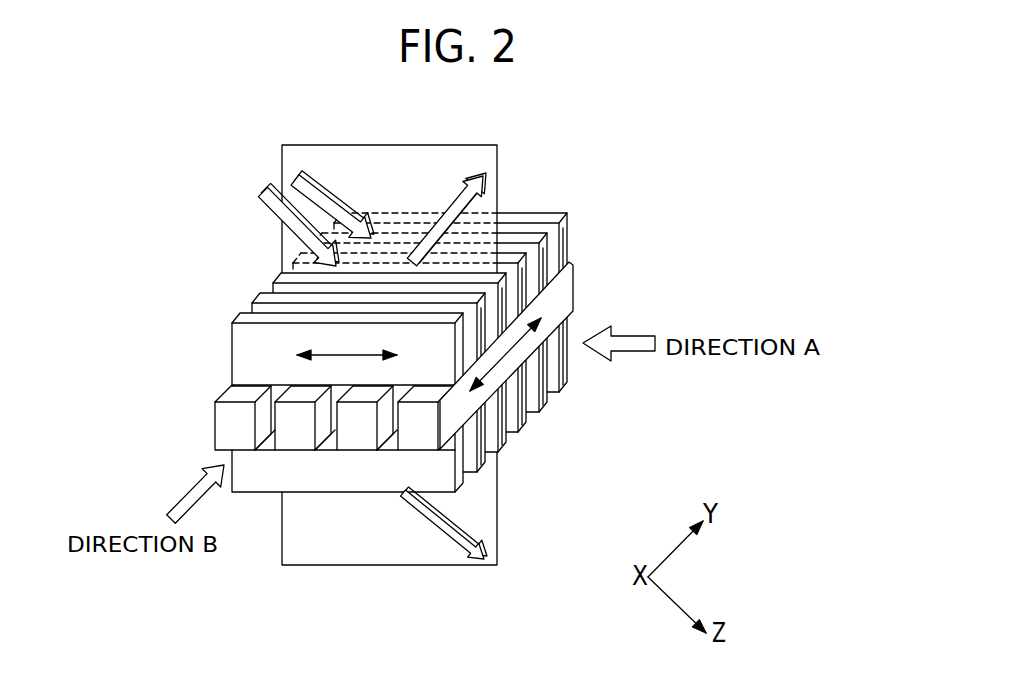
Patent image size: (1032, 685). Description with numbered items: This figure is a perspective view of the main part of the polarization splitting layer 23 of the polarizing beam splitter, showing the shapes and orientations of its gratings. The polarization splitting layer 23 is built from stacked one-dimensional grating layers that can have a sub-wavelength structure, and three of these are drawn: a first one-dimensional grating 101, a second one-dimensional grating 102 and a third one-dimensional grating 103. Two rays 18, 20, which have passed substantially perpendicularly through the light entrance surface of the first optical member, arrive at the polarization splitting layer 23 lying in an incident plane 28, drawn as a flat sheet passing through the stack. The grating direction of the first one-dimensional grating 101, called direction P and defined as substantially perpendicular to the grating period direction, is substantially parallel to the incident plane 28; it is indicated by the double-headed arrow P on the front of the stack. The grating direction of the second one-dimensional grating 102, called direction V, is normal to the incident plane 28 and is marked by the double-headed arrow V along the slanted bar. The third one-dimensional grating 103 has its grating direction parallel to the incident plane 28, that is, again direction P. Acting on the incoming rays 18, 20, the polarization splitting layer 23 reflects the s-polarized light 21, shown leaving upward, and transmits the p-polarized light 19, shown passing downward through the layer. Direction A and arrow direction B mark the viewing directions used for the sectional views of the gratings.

The polarization splitting layer 23 is at (647, 143).
The incident plane 28 is at (446, 146).
The ray 18 is at (284, 192).
The ray 20 is at (298, 224).
The s-polarized light 21 is at (479, 196).
The p-polarized light 19 is at (453, 537).
The first one-dimensional grating 101 is at (566, 232).
The second one-dimensional grating 102 is at (544, 361).
The third one-dimensional grating 103 is at (563, 361).
The direction P is at (330, 353).
The direction V is at (517, 350).